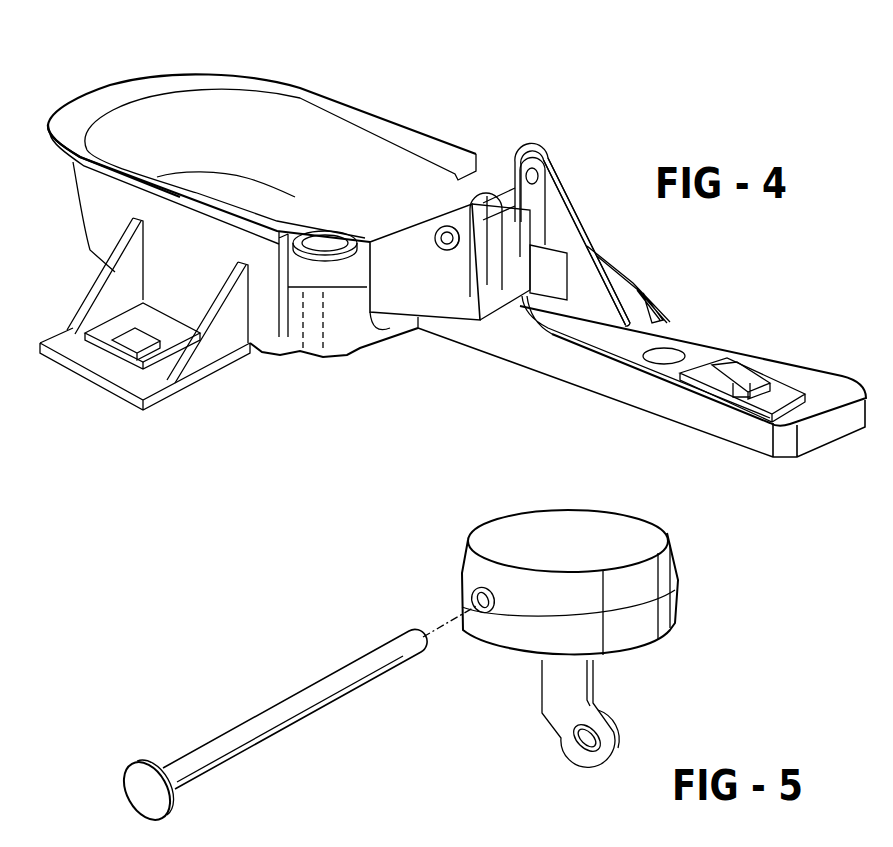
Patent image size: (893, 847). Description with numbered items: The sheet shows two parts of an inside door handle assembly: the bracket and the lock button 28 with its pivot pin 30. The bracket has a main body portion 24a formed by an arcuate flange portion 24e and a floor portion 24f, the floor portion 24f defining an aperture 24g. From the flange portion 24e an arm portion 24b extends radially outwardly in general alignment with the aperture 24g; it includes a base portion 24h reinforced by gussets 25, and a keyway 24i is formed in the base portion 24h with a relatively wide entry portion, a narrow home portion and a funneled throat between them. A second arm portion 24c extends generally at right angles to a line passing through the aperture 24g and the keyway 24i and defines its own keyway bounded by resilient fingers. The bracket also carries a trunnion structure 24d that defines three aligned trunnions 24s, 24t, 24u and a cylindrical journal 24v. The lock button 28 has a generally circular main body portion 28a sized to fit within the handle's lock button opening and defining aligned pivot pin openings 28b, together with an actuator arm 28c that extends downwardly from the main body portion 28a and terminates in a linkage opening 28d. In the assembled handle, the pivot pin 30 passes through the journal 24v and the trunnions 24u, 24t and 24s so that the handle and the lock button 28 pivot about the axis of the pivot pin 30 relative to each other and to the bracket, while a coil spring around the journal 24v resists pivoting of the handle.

In FIG. 4, the main body portion 24a is at (301, 85).
In FIG. 4, the arm portion 24b is at (178, 395).
In FIG. 4, the arm portion 24c is at (742, 340).
In FIG. 4, the trunnion structure 24d is at (570, 195).
In FIG. 4, the arcuate flange portion 24e is at (82, 95).
In FIG. 4, the floor portion 24f is at (290, 210).
In FIG. 4, the aperture 24g is at (328, 232).
In FIG. 4, the base portion 24h is at (118, 393).
In FIG. 4, the keyway 24i is at (110, 352).
In FIG. 4, the trunnion 24s is at (540, 143).
In FIG. 4, the trunnion 24t is at (483, 192).
In FIG. 4, the trunnion 24u is at (457, 199).
In FIG. 4, the cylindrical journal 24v is at (458, 252).
In FIG. 4, the gussets 25 is at (78, 302).
In FIG. 5, the lock button 28 is at (463, 613).
In FIG. 5, the main body portion 28a is at (492, 520).
In FIG. 5, the pivot pin openings 28b is at (465, 603).
In FIG. 5, the actuator arm 28c is at (590, 688).
In FIG. 5, the linkage opening 28d is at (568, 742).
In FIG. 5, the pivot pin 30 is at (252, 752).